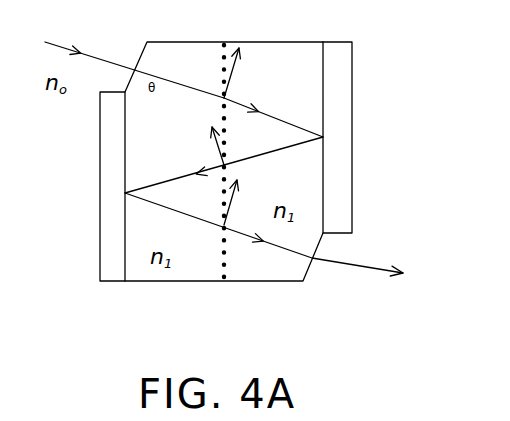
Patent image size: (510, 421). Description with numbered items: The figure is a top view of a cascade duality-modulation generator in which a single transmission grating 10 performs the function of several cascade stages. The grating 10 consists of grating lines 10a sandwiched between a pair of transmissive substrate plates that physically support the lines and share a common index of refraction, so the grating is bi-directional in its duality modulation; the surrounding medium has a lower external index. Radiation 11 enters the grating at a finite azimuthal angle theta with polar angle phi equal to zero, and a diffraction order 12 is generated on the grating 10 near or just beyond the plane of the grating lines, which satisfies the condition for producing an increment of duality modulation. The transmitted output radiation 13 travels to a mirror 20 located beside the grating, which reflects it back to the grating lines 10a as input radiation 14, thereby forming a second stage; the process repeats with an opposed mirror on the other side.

The transmission grating 10 is at (270, 282).
The grating lines 10a is at (219, 258).
The radiation 11 is at (184, 60).
The diffraction order 12 is at (242, 70).
The output radiation 13 is at (292, 116).
The input radiation 14 is at (268, 151).
The mirror 20 is at (352, 212).